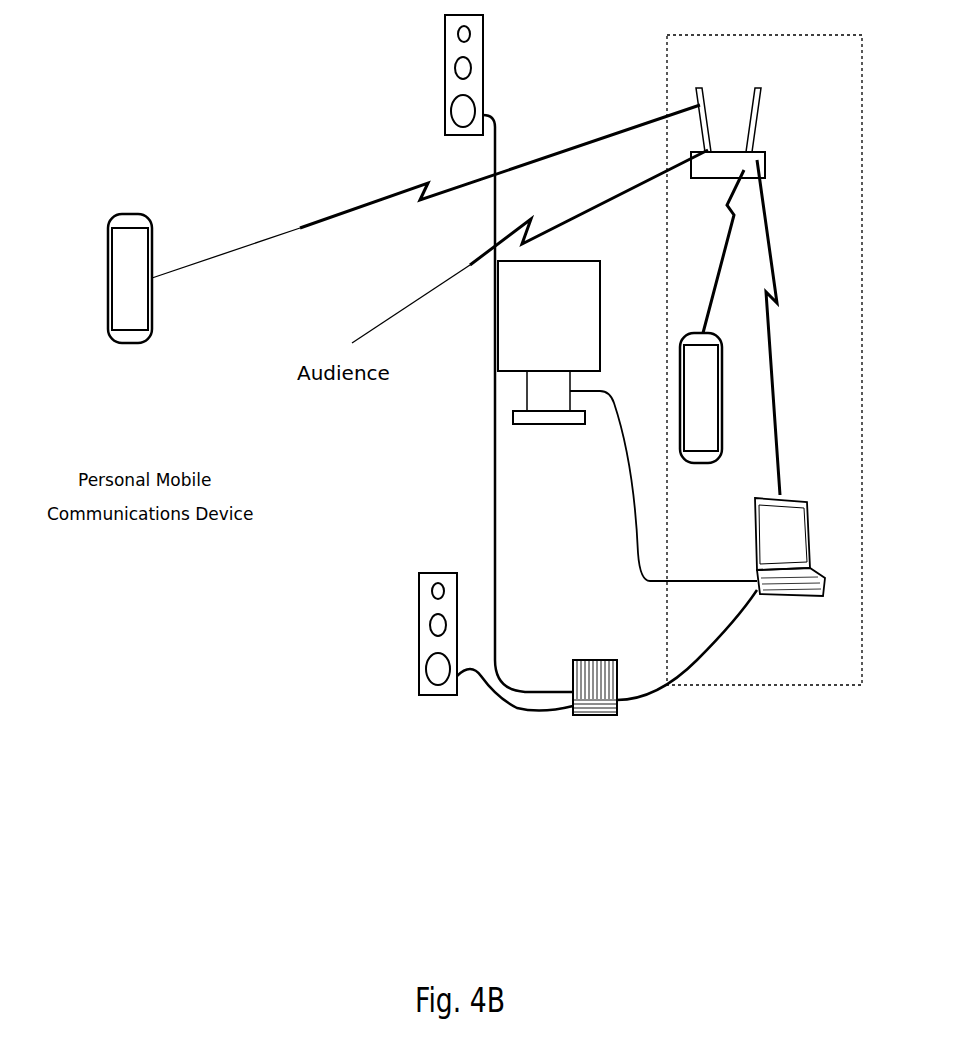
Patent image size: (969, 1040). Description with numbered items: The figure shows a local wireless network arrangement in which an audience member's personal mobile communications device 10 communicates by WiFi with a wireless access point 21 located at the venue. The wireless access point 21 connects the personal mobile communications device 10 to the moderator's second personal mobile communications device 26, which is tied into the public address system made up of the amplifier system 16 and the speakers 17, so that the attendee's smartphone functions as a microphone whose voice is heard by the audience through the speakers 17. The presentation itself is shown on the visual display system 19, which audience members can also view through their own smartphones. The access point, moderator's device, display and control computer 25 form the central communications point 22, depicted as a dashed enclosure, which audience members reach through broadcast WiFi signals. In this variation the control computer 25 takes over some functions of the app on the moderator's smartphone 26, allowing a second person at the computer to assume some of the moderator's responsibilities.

The personal mobile communications device 10 is at (110, 335).
The amplifier system 16 is at (591, 660).
The speakers 17 is at (446, 52).
The visual display system 19 is at (602, 275).
The wireless access point 21 is at (691, 165).
The central communications point 22 is at (862, 592).
The control computer 25 is at (795, 597).
The second personal mobile communications device 26 is at (724, 388).